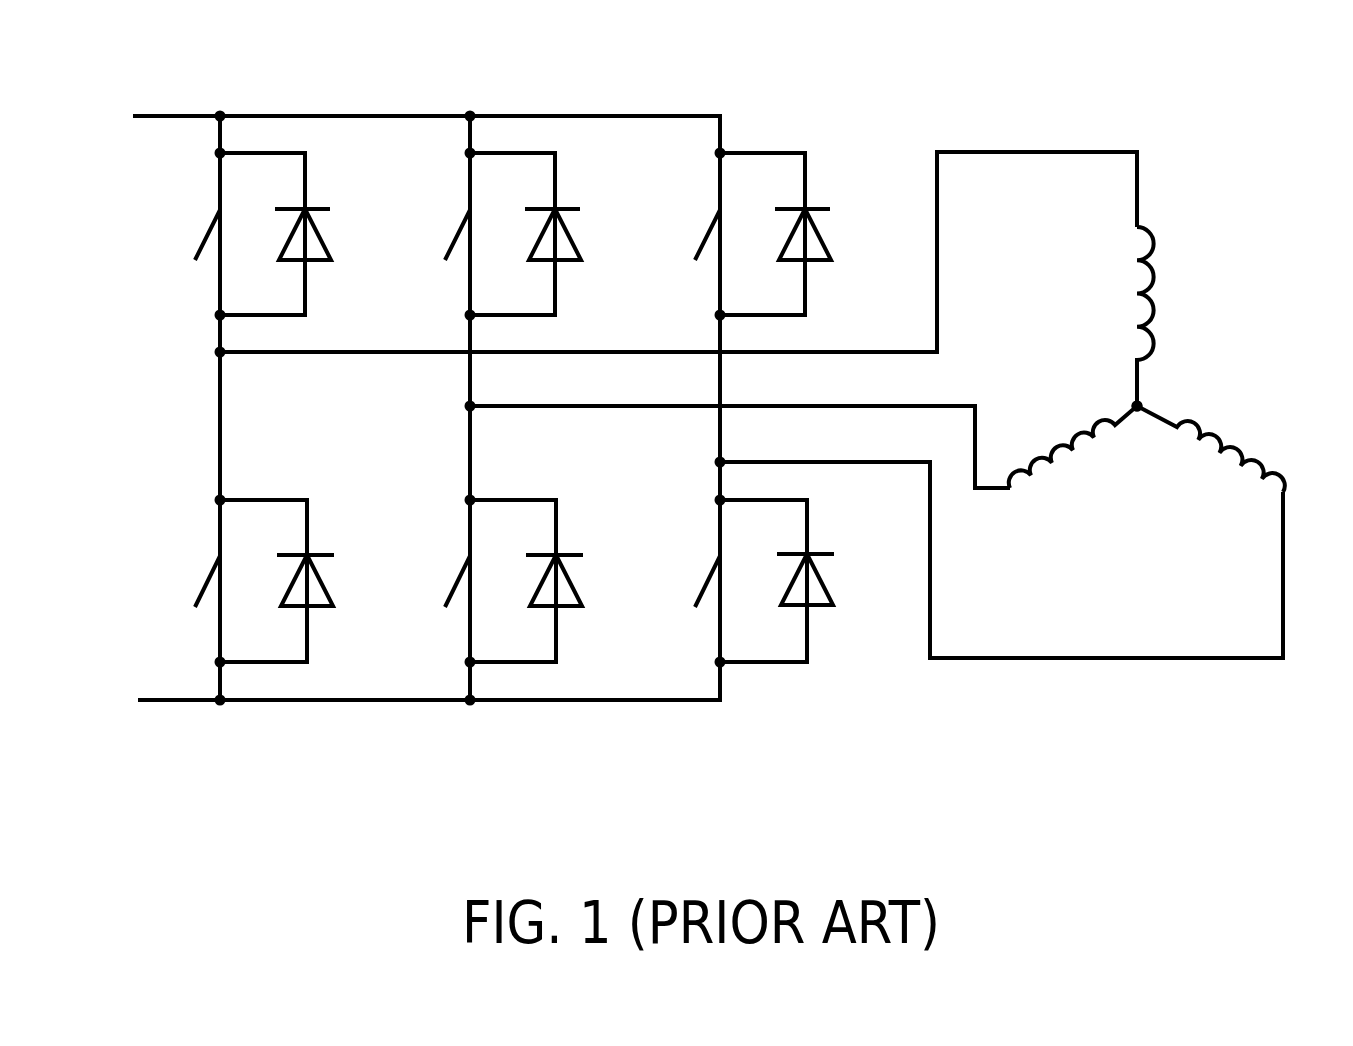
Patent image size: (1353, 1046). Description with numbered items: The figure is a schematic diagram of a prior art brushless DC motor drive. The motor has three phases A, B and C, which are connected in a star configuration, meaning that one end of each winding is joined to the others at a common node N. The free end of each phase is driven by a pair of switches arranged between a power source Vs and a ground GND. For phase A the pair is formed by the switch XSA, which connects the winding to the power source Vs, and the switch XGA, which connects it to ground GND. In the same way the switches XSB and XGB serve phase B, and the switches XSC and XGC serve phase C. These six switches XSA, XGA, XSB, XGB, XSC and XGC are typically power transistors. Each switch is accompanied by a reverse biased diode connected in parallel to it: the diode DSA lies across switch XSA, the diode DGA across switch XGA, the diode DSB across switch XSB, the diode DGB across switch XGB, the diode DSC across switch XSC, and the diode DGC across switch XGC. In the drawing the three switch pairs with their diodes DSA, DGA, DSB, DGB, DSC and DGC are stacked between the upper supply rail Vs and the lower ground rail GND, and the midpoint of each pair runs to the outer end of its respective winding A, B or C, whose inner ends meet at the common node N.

The power source Vs is at (421, 103).
The ground GND is at (420, 710).
The switch XSA is at (186, 234).
The reverse biased diode DSA is at (297, 234).
The switch XSB is at (436, 234).
The reverse biased diode DSB is at (541, 234).
The switch XSC is at (688, 234).
The reverse biased diode DSC is at (795, 234).
The switch XGA is at (186, 581).
The reverse biased diode DGA is at (294, 581).
The switch XGB is at (441, 581).
The reverse biased diode DGB is at (544, 581).
The switch XGC is at (687, 581).
The reverse biased diode DGC is at (795, 581).
The phase A is at (1167, 316).
The phase B is at (1073, 467).
The phase C is at (1211, 449).
The common node N is at (1120, 392).